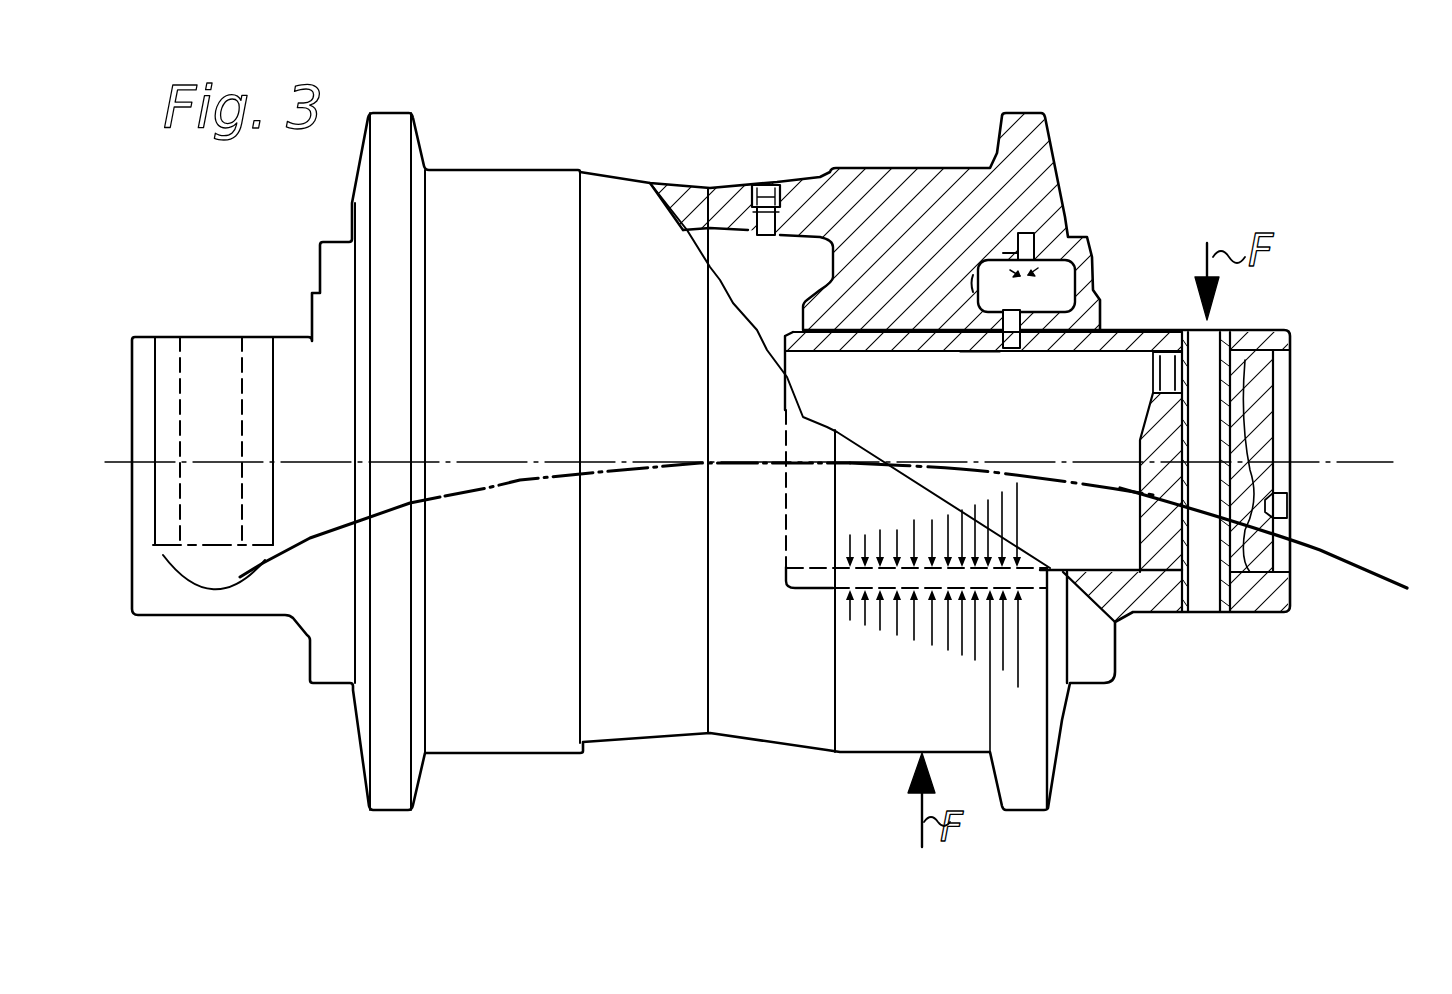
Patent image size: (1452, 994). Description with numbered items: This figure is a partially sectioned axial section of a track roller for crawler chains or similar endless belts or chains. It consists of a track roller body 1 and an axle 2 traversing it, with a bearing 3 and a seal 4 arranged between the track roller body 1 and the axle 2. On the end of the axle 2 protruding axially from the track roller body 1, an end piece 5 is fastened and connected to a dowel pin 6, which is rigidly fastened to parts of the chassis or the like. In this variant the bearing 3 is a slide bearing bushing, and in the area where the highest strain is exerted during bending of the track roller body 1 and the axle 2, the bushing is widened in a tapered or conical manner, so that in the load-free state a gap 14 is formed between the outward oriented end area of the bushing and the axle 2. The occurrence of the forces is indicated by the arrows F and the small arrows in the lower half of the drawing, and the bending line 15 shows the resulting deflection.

The track roller body 1 is at (793, 208).
The axle 2 is at (1203, 425).
The bearing 3 is at (853, 318).
The seal 4 is at (1050, 282).
The end piece 5 is at (1145, 593).
The dowel pin 6 is at (1217, 420).
The gap 14 is at (978, 362).
The bending line 15 is at (1366, 553).